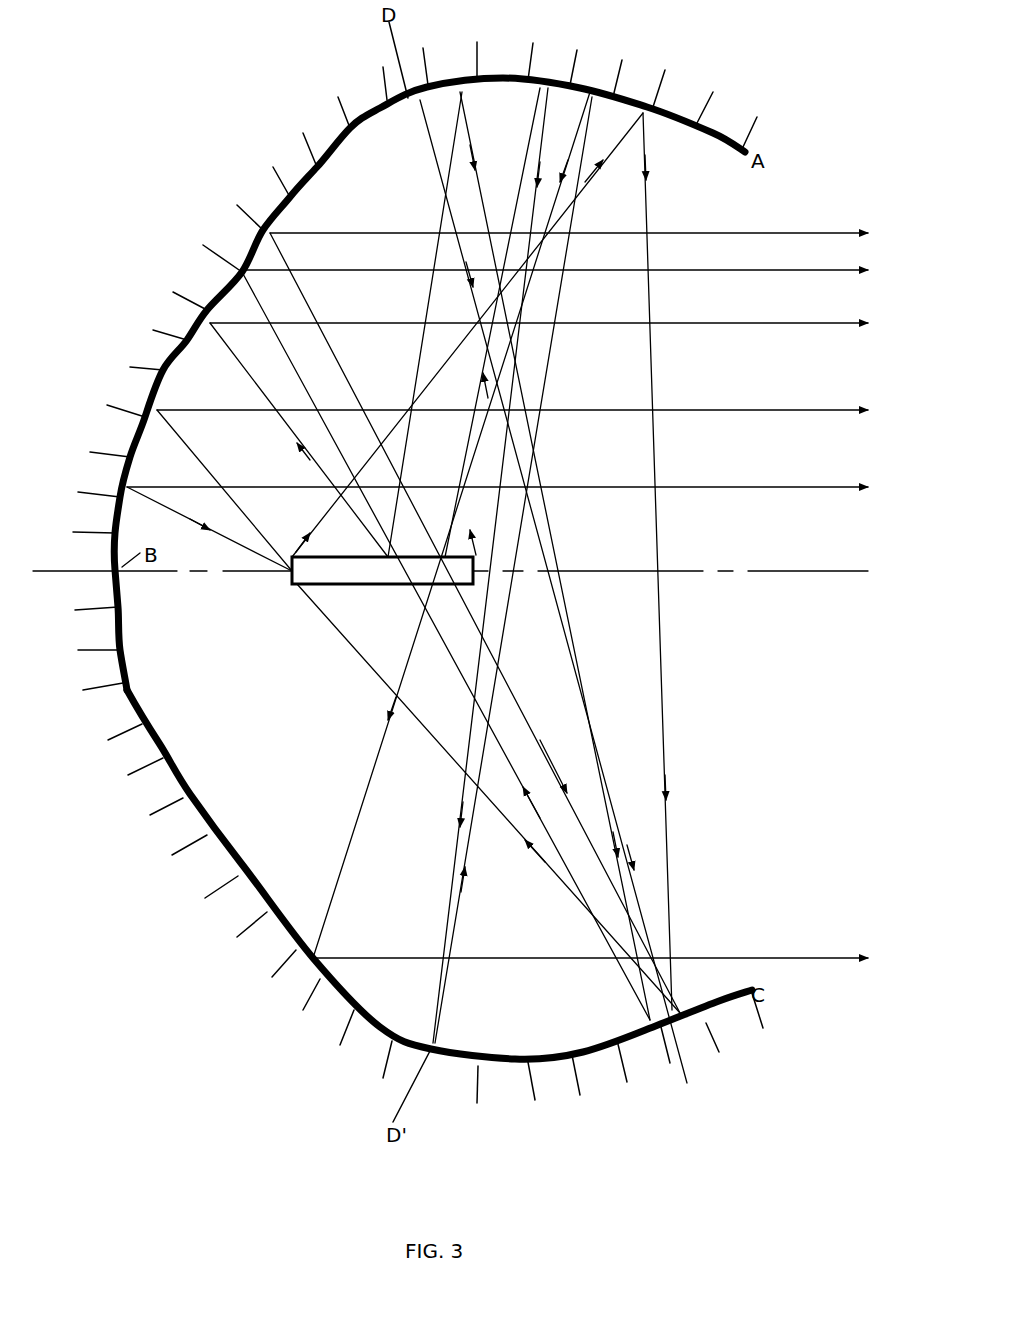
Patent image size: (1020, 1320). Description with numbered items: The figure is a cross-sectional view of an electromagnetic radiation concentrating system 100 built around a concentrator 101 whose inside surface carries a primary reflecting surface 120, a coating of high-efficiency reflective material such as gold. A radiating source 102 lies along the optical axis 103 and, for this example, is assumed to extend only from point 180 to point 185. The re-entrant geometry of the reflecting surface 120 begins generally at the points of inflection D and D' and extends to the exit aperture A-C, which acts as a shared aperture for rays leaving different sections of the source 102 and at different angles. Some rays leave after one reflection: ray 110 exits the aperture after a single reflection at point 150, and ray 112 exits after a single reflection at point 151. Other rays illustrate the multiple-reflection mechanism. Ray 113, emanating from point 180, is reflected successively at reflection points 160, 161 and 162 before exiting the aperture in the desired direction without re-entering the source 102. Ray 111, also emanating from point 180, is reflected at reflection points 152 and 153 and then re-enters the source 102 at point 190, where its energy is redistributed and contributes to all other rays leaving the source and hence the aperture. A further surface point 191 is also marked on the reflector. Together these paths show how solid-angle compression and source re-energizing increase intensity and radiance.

The optical cavity reflector apparatus 100 is at (226, 984).
The concentrator 101 is at (168, 366).
The radiating source 102 is at (288, 578).
The optical axis 103 is at (710, 577).
The ray 110 is at (773, 490).
The ray 111 is at (588, 183).
The ray 112 is at (800, 325).
The ray 113 is at (790, 272).
The reflecting surface 120 is at (163, 739).
The point 150 is at (130, 485).
The point 151 is at (207, 325).
The reflection point 152 is at (645, 118).
The reflection point 153 is at (561, 609).
The reflection point 160 is at (462, 91).
The reflection point 161 is at (646, 1020).
The reflection point 162 is at (242, 275).
The point 180 is at (396, 553).
The point 185 is at (292, 554).
The point 190 is at (307, 587).
The reflection point on surface 191 is at (160, 408).